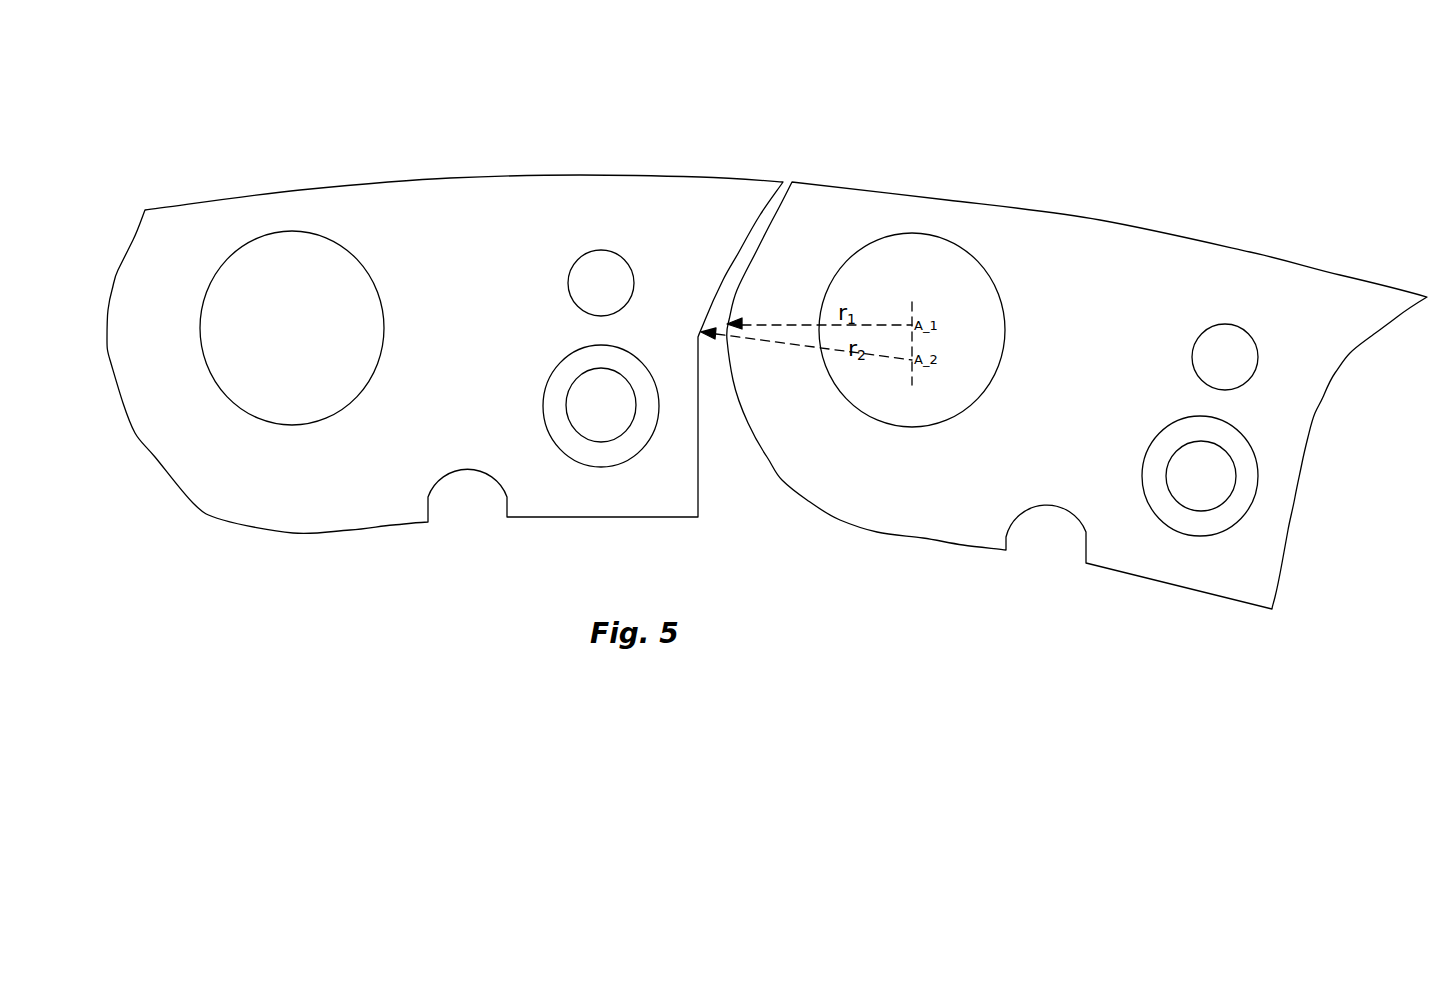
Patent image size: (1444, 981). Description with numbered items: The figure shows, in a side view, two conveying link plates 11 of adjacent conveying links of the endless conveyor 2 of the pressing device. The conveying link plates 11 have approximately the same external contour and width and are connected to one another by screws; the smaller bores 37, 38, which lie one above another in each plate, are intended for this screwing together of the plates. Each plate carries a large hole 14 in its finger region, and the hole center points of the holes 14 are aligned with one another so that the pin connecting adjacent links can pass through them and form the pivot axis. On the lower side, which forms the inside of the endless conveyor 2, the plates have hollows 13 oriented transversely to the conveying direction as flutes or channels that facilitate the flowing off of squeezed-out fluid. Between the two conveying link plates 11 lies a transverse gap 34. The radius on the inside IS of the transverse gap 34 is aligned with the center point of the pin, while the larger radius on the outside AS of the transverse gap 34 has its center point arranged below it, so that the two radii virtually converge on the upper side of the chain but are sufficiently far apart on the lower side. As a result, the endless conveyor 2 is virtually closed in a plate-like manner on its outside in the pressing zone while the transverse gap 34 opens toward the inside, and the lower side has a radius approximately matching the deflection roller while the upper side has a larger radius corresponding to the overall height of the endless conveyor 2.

The endless conveyor 2 is at (767, 338).
The conveying link plate 11 is at (500, 366).
The hollow 13 is at (467, 514).
The hole 14 is at (352, 272).
The transverse gap 34 is at (750, 500).
The bore 37 is at (601, 250).
The bore 38 is at (592, 440).
The outside of the transverse gap AS is at (722, 262).
The inside of the transverse gap IS is at (728, 293).